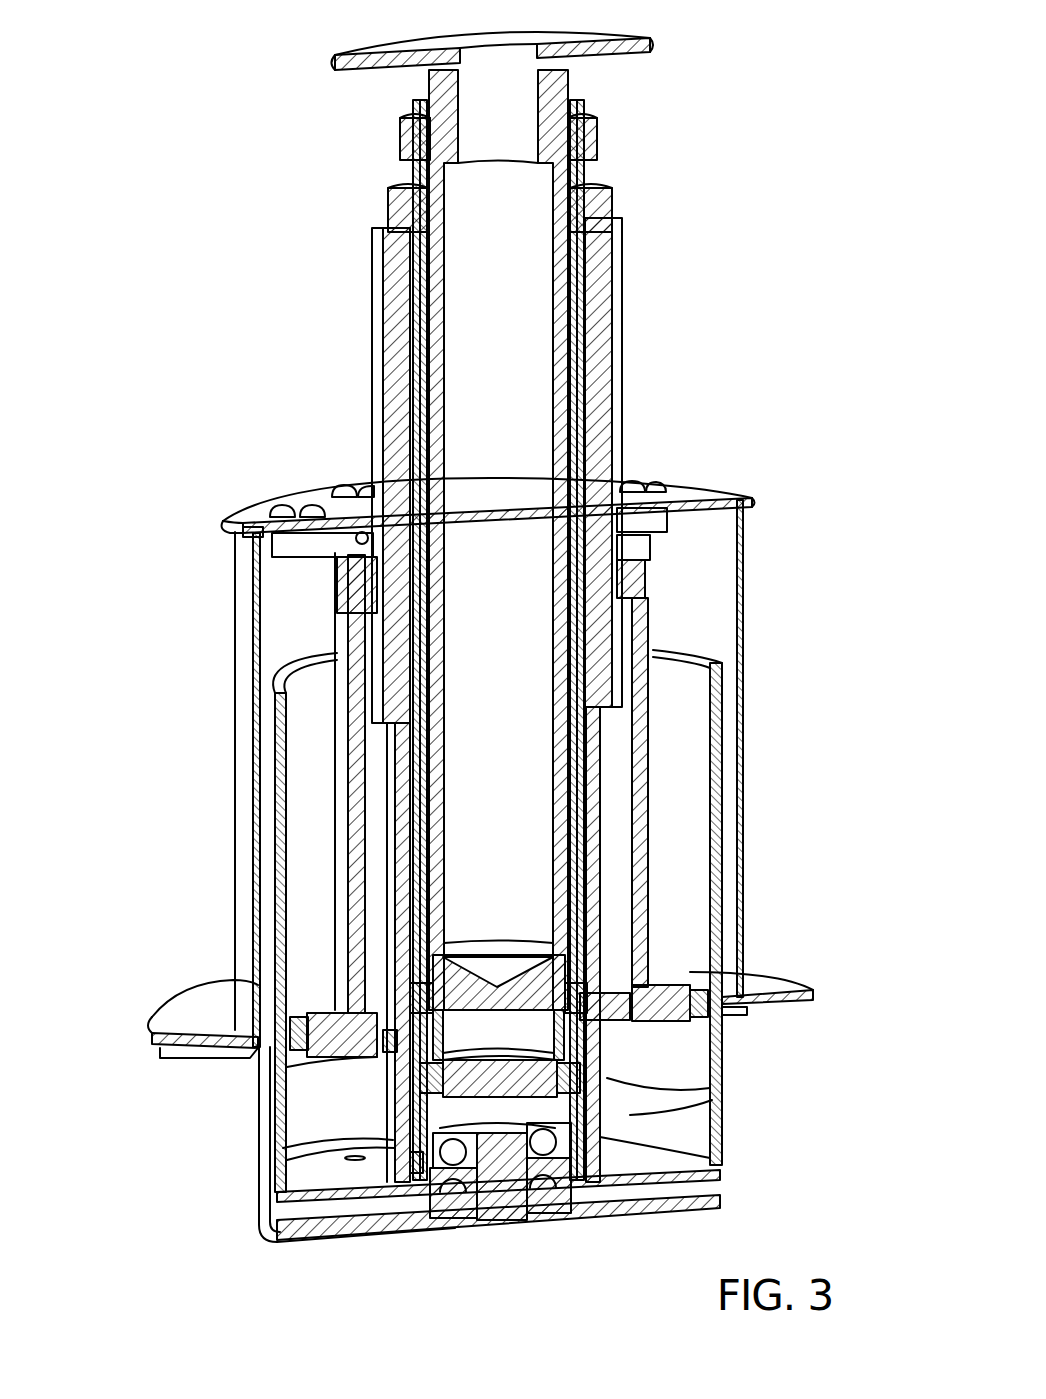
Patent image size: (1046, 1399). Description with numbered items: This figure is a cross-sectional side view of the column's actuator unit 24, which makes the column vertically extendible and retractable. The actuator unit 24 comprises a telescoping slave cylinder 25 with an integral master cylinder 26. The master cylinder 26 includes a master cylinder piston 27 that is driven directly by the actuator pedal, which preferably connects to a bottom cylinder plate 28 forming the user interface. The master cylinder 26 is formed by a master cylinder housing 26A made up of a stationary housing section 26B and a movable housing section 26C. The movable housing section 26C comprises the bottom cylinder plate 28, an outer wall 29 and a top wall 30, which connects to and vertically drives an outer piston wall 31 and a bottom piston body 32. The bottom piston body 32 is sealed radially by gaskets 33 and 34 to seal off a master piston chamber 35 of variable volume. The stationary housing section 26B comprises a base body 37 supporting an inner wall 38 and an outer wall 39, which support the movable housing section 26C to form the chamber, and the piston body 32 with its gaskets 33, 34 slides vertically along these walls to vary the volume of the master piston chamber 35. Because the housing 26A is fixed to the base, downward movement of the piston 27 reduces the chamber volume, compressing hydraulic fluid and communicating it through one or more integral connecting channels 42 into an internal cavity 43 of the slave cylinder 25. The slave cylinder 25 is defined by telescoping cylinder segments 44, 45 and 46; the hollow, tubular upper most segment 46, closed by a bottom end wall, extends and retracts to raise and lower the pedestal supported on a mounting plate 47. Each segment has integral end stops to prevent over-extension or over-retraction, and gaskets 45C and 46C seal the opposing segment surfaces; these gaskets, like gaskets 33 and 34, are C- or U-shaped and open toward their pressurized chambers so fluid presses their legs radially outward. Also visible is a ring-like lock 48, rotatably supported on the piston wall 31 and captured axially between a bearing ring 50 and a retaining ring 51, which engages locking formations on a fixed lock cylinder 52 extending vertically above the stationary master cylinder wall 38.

The actuator unit 24 is at (213, 347).
The telescoping slave cylinder 25 is at (606, 165).
The master cylinder 26 is at (232, 548).
The master cylinder housing 26A is at (235, 752).
The stationary housing section 26B is at (257, 1177).
The movable housing section 26C is at (237, 622).
The master cylinder piston 27 is at (670, 983).
The bottom cylinder plate 28 is at (163, 1017).
The outer wall 29 is at (743, 608).
The top wall 30 is at (675, 495).
The outer piston wall 31 is at (645, 758).
The bottom piston body 32 is at (680, 1022).
The gasket 33 is at (717, 978).
The gasket 34 is at (383, 1047).
The master piston chamber 35 is at (680, 1125).
The base body 37 is at (607, 1213).
The inner wall 38 is at (607, 1080).
The outer wall 39 is at (265, 1140).
The integral connecting channel 42 is at (378, 1212).
The internal cavity 43 is at (489, 1103).
The telescoping cylinder segment 44 is at (590, 872).
The telescoping cylinder segment 45 is at (577, 250).
The gasket 45C is at (384, 1128).
The upper most segment 46 is at (568, 95).
The gasket 46C is at (440, 1000).
The mounting plate 47 is at (372, 50).
The ring-like lock 48 is at (627, 558).
The bearing ring 50 is at (637, 582).
The retaining ring 51 is at (643, 533).
The lock cylinder 52 is at (607, 352).